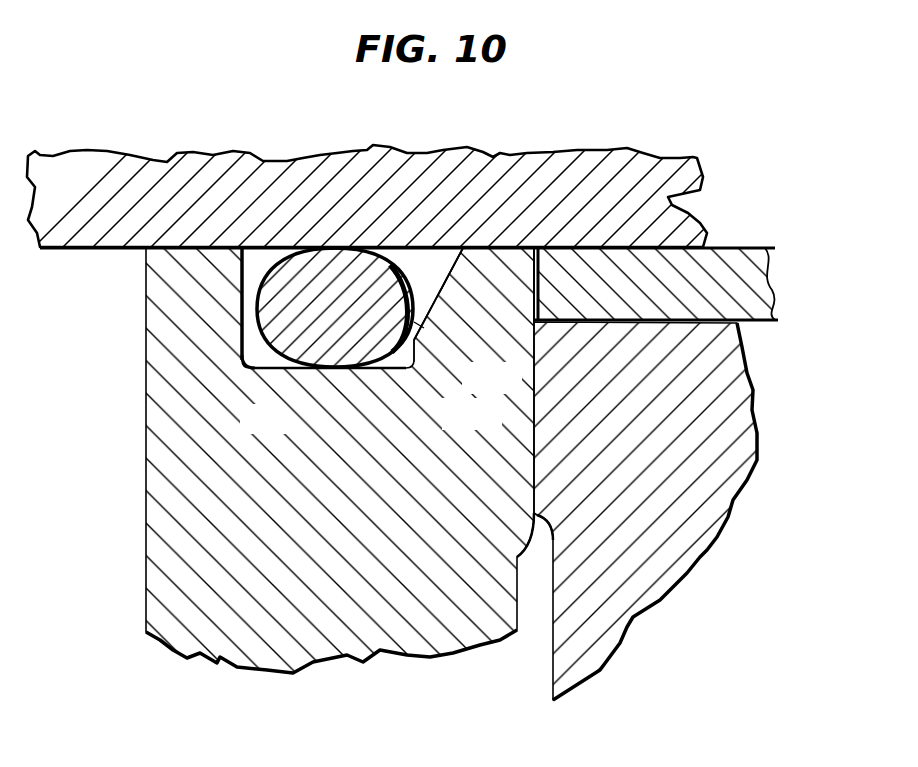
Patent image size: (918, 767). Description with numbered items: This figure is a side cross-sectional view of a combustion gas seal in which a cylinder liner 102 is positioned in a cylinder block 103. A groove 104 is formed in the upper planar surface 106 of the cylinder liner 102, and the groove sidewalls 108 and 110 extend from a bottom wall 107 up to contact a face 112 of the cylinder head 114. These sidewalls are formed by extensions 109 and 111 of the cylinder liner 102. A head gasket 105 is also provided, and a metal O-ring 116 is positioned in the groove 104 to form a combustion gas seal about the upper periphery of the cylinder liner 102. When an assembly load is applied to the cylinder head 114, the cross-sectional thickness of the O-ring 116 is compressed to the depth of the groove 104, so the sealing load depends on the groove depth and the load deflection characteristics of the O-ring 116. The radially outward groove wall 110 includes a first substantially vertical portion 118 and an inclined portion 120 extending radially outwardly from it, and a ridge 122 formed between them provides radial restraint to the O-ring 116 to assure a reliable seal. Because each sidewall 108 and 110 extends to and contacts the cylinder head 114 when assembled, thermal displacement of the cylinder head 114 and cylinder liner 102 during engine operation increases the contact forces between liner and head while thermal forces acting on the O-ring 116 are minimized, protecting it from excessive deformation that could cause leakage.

The cylinder liner 102 is at (241, 595).
The cylinder block 103 is at (695, 375).
The groove 104 is at (257, 325).
The head gasket 105 is at (733, 285).
The upper planar surface 106 is at (193, 240).
The bottom wall 107 is at (331, 372).
The groove sidewall 108 is at (239, 314).
The extension 109 is at (187, 289).
The radially outward groove wall 110 is at (428, 290).
The extension 111 is at (500, 276).
The face 112 is at (335, 240).
The cylinder head 114 is at (595, 200).
The O-ring 116 is at (248, 357).
The first substantially vertical portion 118 is at (417, 362).
The inclined portion 120 is at (462, 262).
The ridge 122 is at (422, 327).